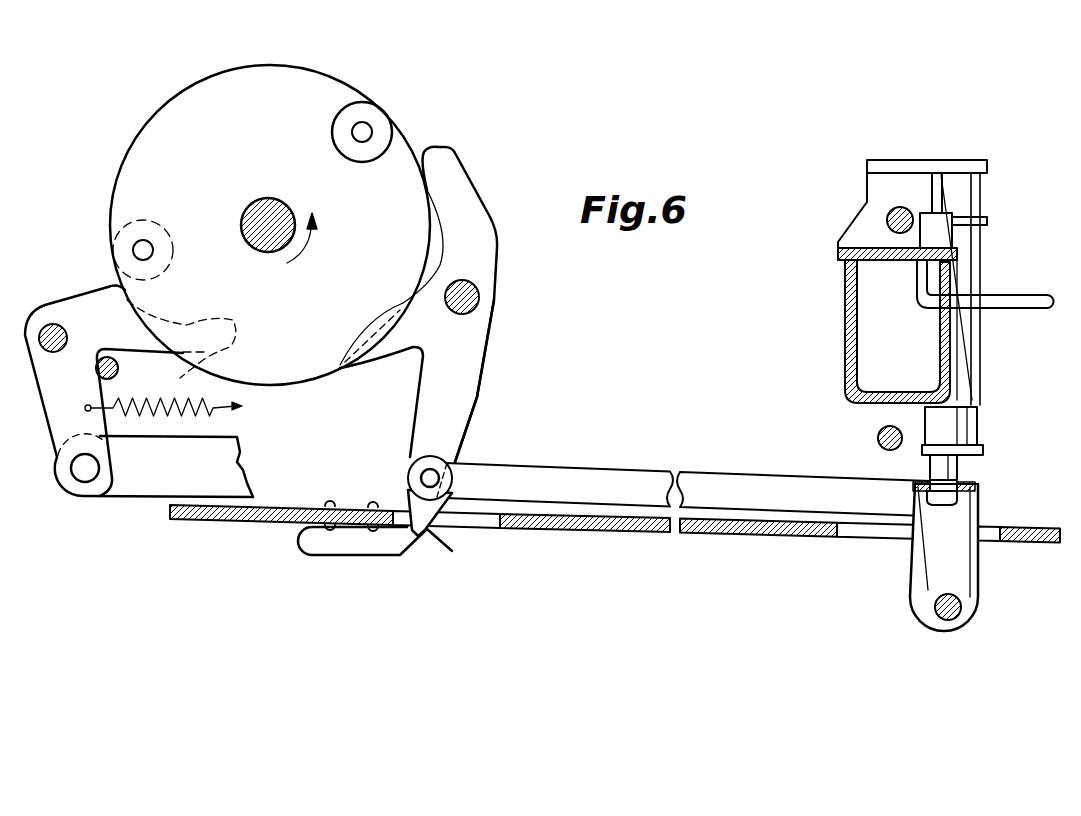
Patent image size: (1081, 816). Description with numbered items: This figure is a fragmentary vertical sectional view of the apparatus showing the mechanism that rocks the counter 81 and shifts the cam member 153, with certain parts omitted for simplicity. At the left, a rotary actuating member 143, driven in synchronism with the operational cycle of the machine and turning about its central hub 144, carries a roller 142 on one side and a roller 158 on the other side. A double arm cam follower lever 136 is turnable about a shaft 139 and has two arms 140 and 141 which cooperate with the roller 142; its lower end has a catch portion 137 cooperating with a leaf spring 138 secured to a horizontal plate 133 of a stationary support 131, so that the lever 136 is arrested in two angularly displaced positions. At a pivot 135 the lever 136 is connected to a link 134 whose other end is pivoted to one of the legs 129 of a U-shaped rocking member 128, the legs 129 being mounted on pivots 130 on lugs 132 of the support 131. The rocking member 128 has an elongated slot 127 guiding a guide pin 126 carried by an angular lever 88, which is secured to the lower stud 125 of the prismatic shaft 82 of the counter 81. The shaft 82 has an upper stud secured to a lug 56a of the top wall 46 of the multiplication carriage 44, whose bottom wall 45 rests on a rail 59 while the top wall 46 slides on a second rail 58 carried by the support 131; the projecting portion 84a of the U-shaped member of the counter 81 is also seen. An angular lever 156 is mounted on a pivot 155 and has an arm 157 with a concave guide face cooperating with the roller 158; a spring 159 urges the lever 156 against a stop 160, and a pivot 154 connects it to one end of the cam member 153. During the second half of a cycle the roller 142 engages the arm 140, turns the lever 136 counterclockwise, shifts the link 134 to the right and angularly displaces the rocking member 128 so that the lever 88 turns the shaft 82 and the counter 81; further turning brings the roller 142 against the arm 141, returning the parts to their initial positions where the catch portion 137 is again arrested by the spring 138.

The rotary actuating member 143 is at (270, 85).
The hub shaft 144 is at (267, 217).
The roller 142 is at (373, 122).
The roller 158 is at (127, 250).
The arm 141 is at (438, 167).
The shaft 139 is at (467, 292).
The double arm cam follower lever 136 is at (467, 360).
The arm 140 is at (368, 358).
The pivot pin 135 is at (421, 477).
The pivot 155 is at (53, 330).
The angular lever 156 is at (55, 412).
The stop 160 is at (118, 370).
The arm 157 is at (212, 345).
The spring 159 is at (162, 407).
The pivot 154 is at (88, 477).
The cam member 153 is at (147, 483).
The plate 133 is at (930, 512).
The catch portion 137 is at (413, 527).
The leaf spring 138 is at (423, 543).
The link 134 is at (738, 488).
The lug 56a is at (918, 165).
The rail 58 is at (887, 223).
The prismatic shaft 82 is at (973, 247).
The counter 81 is at (988, 284).
The top wall 46 is at (895, 262).
The projecting portion 84a is at (1034, 309).
The multiplication carriage 44 is at (836, 328).
The bottom wall 45 is at (889, 393).
The angular lever 88 is at (943, 452).
The rail 59 is at (878, 434).
The stem 125 is at (960, 470).
The elongated slot 127 is at (925, 480).
The U-shaped rocking member 128 is at (920, 498).
The guide pin 126 is at (976, 498).
The stationary support 131 is at (1042, 527).
The lug 132 is at (979, 573).
The leg 129 is at (940, 571).
The pivot 130 is at (943, 608).